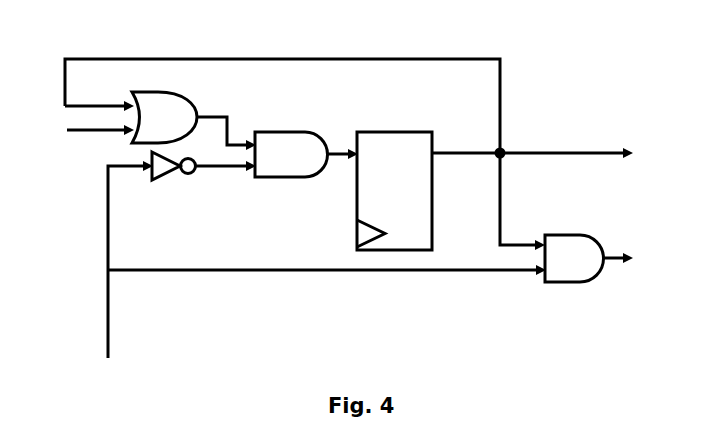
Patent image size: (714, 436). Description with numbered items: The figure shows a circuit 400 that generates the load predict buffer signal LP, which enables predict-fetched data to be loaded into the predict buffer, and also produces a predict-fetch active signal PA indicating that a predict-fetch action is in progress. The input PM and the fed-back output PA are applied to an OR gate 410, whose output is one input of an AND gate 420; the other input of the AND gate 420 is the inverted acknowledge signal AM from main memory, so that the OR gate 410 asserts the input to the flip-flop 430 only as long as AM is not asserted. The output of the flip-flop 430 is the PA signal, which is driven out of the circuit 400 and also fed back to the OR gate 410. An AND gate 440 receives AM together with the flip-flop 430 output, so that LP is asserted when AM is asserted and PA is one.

The circuit 400 is at (186, 31).
The OR gate 410 is at (164, 117).
The AND gate 420 is at (291, 154).
The flip-flop 430 is at (394, 191).
The AND gate 440 is at (574, 258).